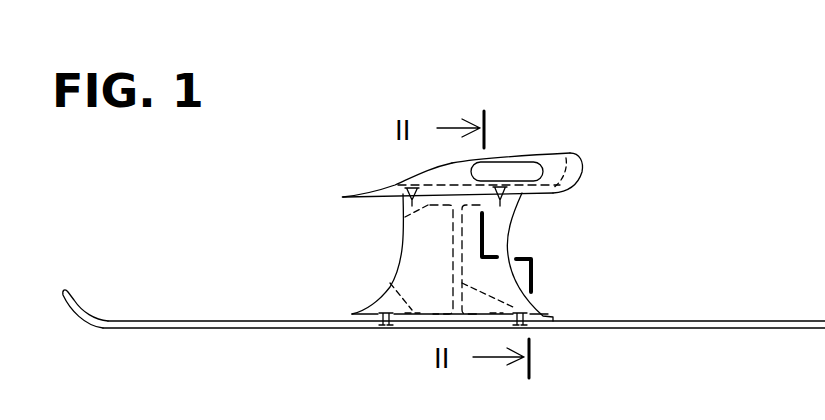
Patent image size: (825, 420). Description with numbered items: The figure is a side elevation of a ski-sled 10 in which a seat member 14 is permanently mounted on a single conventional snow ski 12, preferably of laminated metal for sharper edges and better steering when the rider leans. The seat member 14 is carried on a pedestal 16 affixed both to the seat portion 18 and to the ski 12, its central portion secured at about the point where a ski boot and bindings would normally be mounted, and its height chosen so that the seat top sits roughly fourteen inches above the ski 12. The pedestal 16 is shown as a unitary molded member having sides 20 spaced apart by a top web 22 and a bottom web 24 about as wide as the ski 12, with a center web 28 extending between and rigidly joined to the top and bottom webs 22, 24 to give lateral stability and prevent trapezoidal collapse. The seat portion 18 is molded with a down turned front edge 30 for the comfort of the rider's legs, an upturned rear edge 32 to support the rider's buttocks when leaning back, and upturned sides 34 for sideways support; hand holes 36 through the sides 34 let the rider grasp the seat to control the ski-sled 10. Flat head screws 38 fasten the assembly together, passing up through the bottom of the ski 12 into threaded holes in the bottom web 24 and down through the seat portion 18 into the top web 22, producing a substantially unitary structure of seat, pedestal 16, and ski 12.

The ski-sled 10 is at (198, 169).
The ski 12 is at (238, 321).
The seat member 14 is at (637, 226).
The pedestal 16 is at (507, 244).
The seat portion 18 is at (454, 182).
The sides 20 is at (427, 266).
The top web 22 is at (402, 219).
The bottom web 24 is at (387, 278).
The center web 28 is at (546, 292).
The down turned front edge 30 is at (343, 197).
The cap rear end 32 is at (582, 160).
The upturned sides 34 is at (558, 153).
The hand holes 36 is at (511, 158).
The flat head screws 38 is at (409, 183).